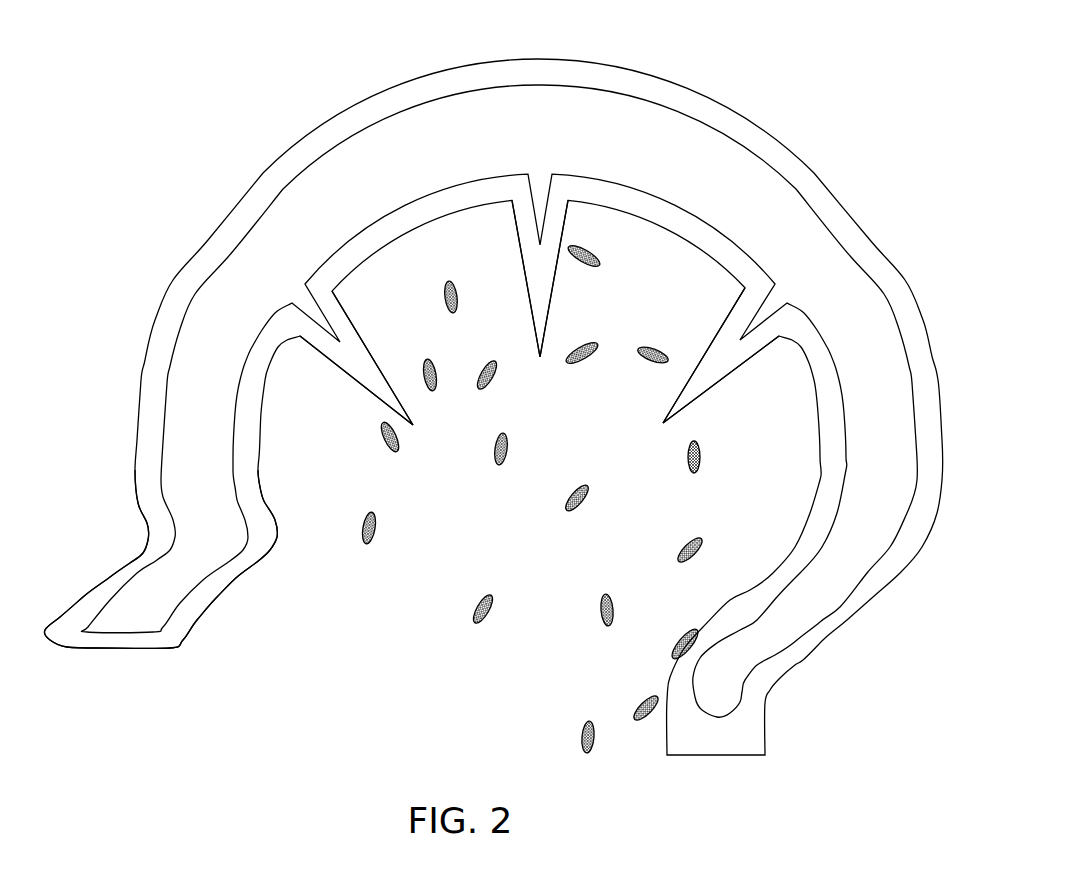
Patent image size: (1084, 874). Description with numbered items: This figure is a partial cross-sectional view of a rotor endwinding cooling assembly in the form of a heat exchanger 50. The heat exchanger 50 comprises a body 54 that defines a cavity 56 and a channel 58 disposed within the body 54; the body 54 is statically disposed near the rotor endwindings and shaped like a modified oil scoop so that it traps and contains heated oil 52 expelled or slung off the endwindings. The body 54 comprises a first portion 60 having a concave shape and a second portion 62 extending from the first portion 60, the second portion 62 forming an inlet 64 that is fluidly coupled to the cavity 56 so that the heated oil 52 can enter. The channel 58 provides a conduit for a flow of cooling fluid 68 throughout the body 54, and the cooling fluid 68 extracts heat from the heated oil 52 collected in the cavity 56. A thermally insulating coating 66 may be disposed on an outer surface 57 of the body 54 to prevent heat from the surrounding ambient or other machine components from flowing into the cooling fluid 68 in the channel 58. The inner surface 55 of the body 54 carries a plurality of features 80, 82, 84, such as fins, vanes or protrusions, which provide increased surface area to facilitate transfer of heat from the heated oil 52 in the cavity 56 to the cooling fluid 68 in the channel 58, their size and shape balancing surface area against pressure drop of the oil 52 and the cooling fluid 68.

The heat exchanger 50 is at (874, 82).
The heated oil 52 is at (358, 540).
The body 54 is at (493, 395).
The inner surface 55 is at (388, 244).
The cavity 56 is at (549, 561).
The outer surface 57 is at (813, 170).
The channel 58 is at (805, 247).
The first portion 60 is at (714, 99).
The second portion 62 is at (93, 585).
The inlet 64 is at (391, 637).
The thermally insulating coating 66 is at (759, 126).
The cooling fluid 68 is at (202, 378).
The feature 80 is at (428, 452).
The feature 82 is at (541, 373).
The feature 84 is at (656, 446).